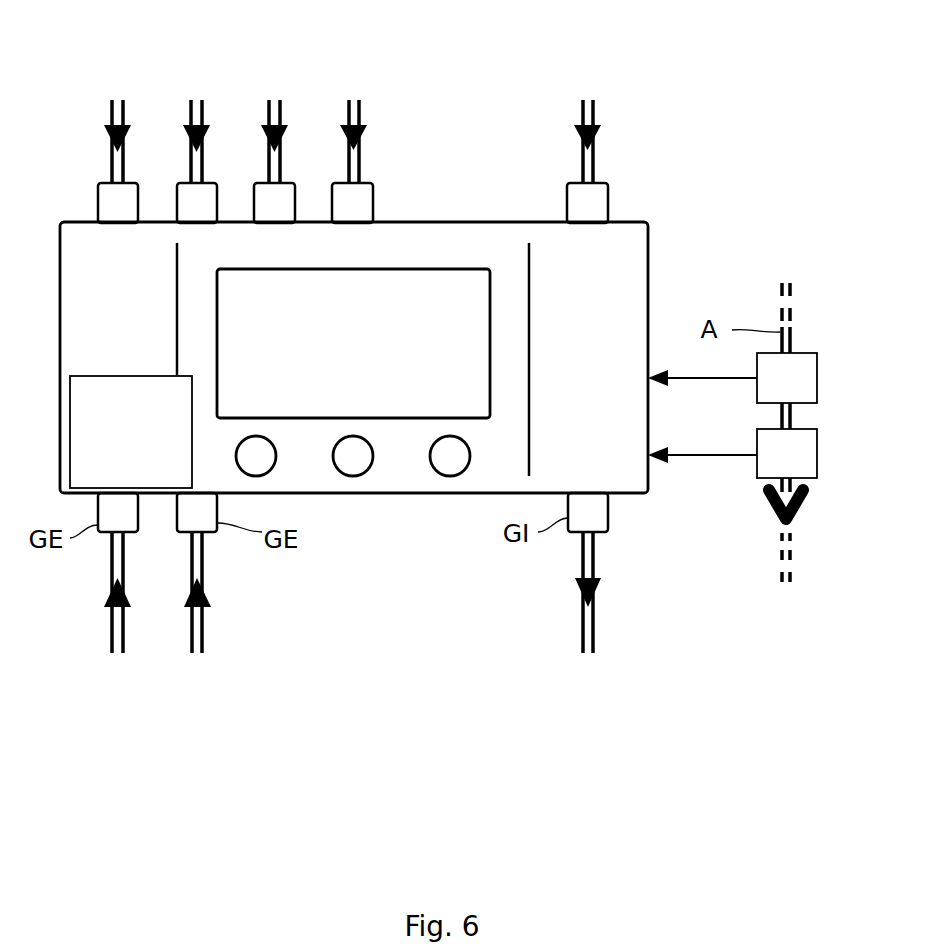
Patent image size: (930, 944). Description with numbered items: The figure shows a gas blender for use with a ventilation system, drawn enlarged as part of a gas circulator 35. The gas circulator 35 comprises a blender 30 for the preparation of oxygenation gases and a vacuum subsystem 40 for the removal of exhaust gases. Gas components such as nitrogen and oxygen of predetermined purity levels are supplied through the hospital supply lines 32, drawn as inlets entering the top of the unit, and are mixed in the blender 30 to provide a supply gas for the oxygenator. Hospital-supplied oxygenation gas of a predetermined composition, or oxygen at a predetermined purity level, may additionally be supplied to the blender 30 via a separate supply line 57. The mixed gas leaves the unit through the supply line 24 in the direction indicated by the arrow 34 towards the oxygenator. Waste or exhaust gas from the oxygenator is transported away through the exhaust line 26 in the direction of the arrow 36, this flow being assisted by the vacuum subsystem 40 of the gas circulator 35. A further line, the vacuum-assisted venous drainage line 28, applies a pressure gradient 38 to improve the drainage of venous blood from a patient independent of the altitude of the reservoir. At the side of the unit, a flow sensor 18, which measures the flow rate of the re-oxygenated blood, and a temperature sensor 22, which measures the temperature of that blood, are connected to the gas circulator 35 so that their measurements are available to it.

The gas circulator 35 is at (530, 55).
The hospital supply lines 32 is at (361, 107).
The supply line 57 is at (595, 107).
The blender 30 is at (343, 355).
The vacuum subsystem 40 is at (115, 442).
The flow sensor 18 is at (772, 393).
The temperature sensor 22 is at (772, 469).
The vacuum-assisted venous drainage line 28 is at (110, 631).
The pressure gradient 38 is at (110, 598).
The exhaust line 26 is at (205, 620).
The arrow 36 is at (205, 598).
The supply line 24 is at (580, 624).
The arrow 34 is at (578, 587).